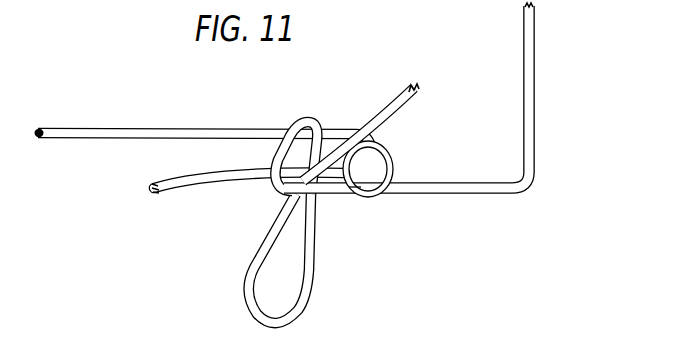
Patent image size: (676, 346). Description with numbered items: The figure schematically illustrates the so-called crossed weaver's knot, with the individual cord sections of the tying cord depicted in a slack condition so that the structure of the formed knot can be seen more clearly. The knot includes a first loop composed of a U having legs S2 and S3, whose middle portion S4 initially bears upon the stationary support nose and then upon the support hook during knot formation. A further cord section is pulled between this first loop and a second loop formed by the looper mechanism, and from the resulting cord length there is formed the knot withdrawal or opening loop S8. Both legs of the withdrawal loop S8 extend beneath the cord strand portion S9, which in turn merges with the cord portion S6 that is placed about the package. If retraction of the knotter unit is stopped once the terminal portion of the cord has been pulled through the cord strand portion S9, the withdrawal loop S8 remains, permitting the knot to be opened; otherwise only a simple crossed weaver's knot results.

The leg of the first loop S2 is at (125, 131).
The leg of the first loop S3 is at (180, 183).
The middle portion of the first loop S4 is at (389, 158).
The cord portion placed about the package S6 is at (534, 72).
The knot withdrawal or opening loop S8 is at (307, 297).
The cord strand portion S9 is at (355, 190).